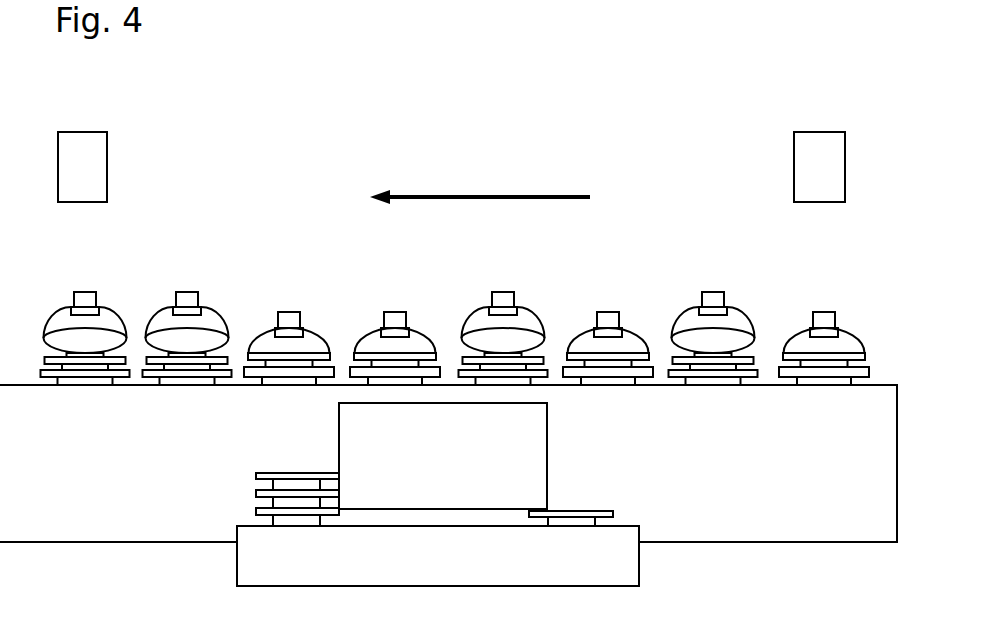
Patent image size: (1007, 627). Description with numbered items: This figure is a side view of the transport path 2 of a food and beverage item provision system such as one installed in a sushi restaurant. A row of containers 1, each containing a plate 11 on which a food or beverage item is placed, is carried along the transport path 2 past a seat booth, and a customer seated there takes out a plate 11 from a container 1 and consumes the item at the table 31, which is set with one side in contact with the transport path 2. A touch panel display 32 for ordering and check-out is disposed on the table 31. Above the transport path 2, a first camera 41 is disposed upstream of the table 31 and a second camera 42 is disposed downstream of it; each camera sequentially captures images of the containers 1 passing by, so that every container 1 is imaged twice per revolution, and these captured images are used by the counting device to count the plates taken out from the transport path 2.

The container 1 is at (365, 289).
The transport path 2 is at (810, 527).
The plate 11 is at (257, 493).
The table 31 is at (248, 562).
The touch panel display 32 is at (533, 457).
The first camera 41 is at (834, 178).
The second camera 42 is at (99, 172).